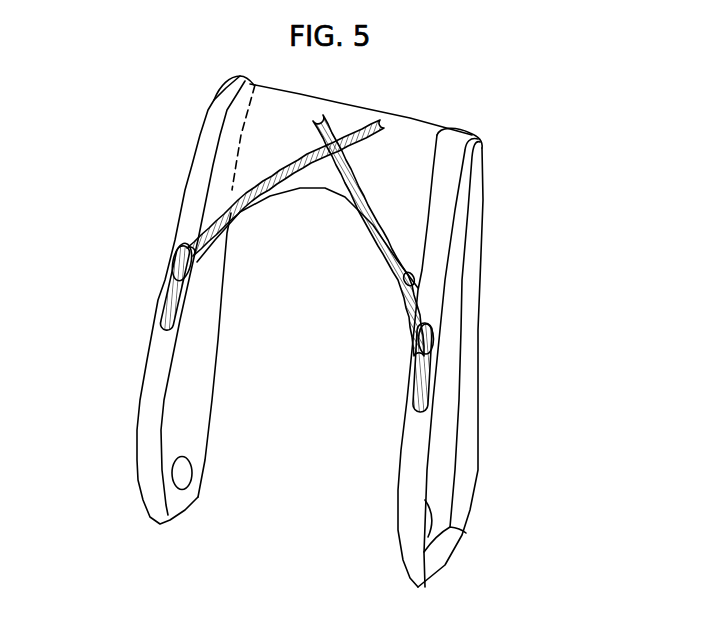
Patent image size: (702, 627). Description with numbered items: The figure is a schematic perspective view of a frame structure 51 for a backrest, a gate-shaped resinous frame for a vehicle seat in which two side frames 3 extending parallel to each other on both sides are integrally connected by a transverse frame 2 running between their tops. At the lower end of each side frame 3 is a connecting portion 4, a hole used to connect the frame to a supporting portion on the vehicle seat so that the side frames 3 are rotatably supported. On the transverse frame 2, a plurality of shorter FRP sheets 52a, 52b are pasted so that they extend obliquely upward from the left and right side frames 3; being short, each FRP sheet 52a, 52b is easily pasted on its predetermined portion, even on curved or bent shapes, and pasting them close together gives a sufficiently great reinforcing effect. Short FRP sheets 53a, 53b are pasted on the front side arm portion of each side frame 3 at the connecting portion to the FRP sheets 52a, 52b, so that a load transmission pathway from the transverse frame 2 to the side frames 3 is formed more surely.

The frame structure for a backrest 51 is at (507, 143).
The transverse frame 2 is at (408, 150).
The side frames 3 is at (205, 338).
The connecting portions 4 is at (183, 471).
The FRP sheet 52a is at (315, 114).
The FRP sheet 52b is at (316, 124).
The short FRP sheet 53a is at (165, 302).
The short FRP sheet 53b is at (428, 376).